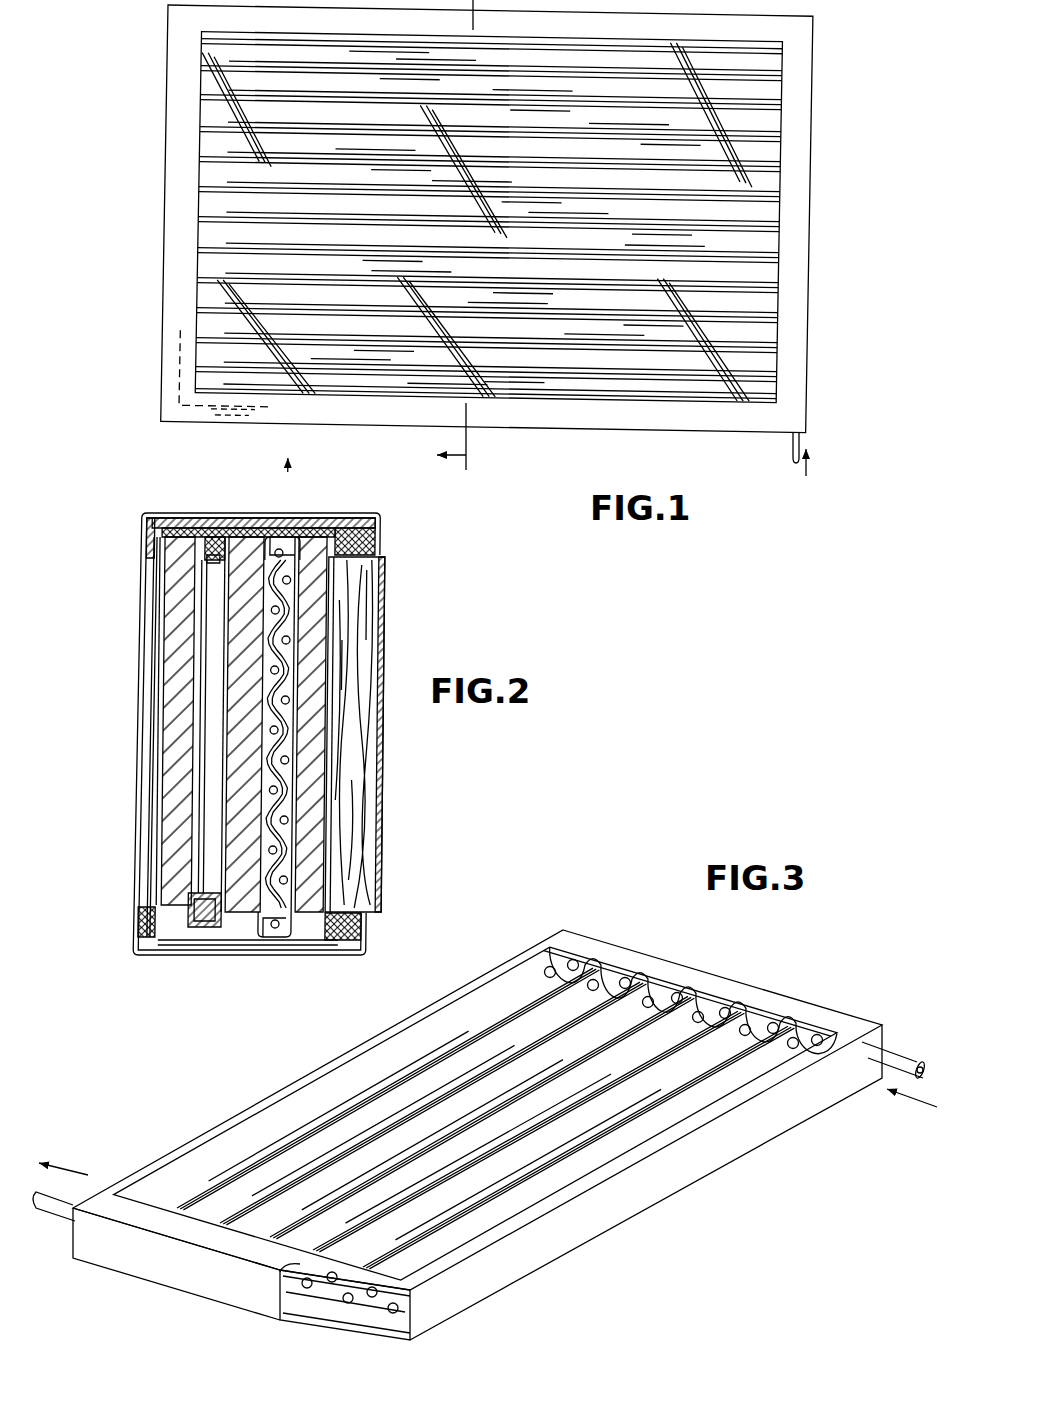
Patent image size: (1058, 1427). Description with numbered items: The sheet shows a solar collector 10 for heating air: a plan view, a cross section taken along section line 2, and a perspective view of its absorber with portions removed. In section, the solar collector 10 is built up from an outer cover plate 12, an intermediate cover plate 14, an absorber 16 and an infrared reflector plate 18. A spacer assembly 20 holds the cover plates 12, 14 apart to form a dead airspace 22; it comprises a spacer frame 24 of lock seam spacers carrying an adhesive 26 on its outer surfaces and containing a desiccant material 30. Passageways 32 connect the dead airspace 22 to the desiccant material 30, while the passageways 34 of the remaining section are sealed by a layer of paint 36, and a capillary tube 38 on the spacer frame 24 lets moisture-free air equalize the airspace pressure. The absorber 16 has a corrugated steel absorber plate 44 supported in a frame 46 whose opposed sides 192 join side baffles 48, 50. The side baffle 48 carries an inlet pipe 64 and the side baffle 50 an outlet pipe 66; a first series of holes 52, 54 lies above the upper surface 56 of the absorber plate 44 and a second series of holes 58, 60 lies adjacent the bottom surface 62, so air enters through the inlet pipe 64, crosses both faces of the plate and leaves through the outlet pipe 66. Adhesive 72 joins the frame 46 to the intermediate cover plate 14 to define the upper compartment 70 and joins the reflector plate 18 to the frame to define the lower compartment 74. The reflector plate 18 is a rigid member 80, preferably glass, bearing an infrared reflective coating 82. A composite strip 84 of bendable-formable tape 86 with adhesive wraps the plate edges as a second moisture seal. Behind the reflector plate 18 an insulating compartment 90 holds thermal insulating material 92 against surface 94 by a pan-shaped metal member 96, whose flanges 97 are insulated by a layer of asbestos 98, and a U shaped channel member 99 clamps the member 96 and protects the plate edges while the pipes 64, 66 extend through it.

In FIG. 1, the section line 2— 2 is at (466, 237).
In FIG. 1, the solar collector 10 is at (824, 85).
In FIG. 2, the solar collector 10 is at (122, 943).
In FIG. 2, the outer cover plate 12 is at (178, 590).
In FIG. 2, the intermediate cover plate 14 is at (240, 615).
In FIG. 2, the absorber 16 is at (290, 937).
In FIG. 3, the absorber 16 is at (597, 914).
In FIG. 2, the infrared reflector plate 18 is at (336, 579).
In FIG. 2, the spacer assembly 20 is at (195, 538).
In FIG. 2, the dead airspace 22 is at (210, 648).
In FIG. 2, the spacer frame 24 is at (216, 535).
In FIG. 2, the adhesive 26 is at (233, 525).
In FIG. 2, the desiccant material 30 is at (225, 935).
In FIG. 2, the passageways 32 is at (210, 557).
In FIG. 2, the passageways 34 is at (193, 904).
In FIG. 2, the layer of paint 36 is at (204, 895).
In FIG. 1, the capillary tube 38 is at (243, 425).
In FIG. 2, the capillary tube 38 is at (207, 935).
In FIG. 2, the absorber plate 44 is at (268, 910).
In FIG. 3, the absorber plate 44 is at (505, 998).
In FIG. 3, the frame 46 is at (447, 985).
In FIG. 3, the side baffle 48 is at (665, 965).
In FIG. 3, the side baffle 50 is at (200, 1277).
In FIG. 3, the first series of holes 52 is at (627, 978).
In FIG. 3, the first series of holes 54 is at (371, 1298).
In FIG. 2, the upper surface 56 is at (270, 937).
In FIG. 3, the upper surface 56 is at (725, 1040).
In FIG. 3, the second series of holes 58 is at (705, 1005).
In FIG. 3, the second series of holes 60 is at (306, 1290).
In FIG. 2, the bottom surface 62 is at (340, 528).
In FIG. 1, the inlet pipe 64 is at (790, 452).
In FIG. 3, the inlet pipe 64 is at (900, 1058).
In FIG. 2, the outlet pipe 66 is at (288, 494).
In FIG. 3, the outlet pipe 66 is at (55, 1208).
In FIG. 2, the compartment 70 is at (262, 562).
In FIG. 2, the adhesive 72 is at (272, 540).
In FIG. 2, the compartment 74 is at (293, 622).
In FIG. 2, the rigid member 80 is at (305, 940).
In FIG. 2, the infrared reflective coating 82 is at (297, 824).
In FIG. 2, the composite strip 84 is at (152, 945).
In FIG. 2, the bendable-formable tape 86 is at (147, 922).
In FIG. 2, the insulating compartment 90 is at (388, 622).
In FIG. 2, the thermal insulating material 92 is at (365, 752).
In FIG. 2, the surface 94 is at (326, 714).
In FIG. 2, the pan-shaped metal member 96 is at (380, 803).
In FIG. 2, the flanges 97 is at (365, 925).
In FIG. 2, the layer of asbestos 98 is at (366, 941).
In FIG. 2, the U shaped channel member 99 is at (137, 951).
In FIG. 3, the opposed sides 192 is at (210, 1128).